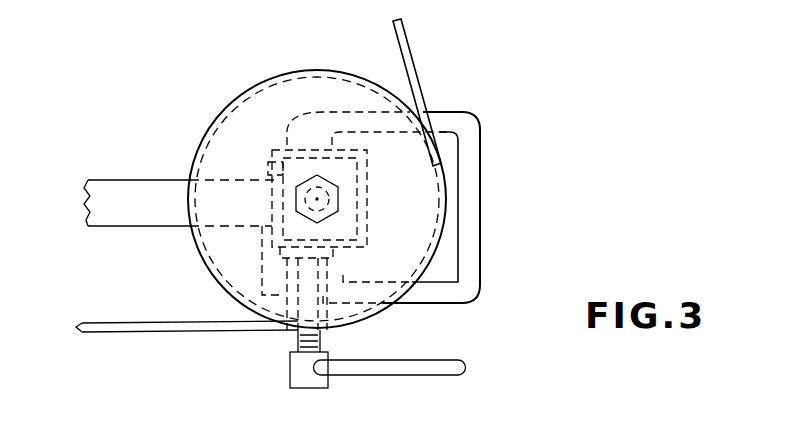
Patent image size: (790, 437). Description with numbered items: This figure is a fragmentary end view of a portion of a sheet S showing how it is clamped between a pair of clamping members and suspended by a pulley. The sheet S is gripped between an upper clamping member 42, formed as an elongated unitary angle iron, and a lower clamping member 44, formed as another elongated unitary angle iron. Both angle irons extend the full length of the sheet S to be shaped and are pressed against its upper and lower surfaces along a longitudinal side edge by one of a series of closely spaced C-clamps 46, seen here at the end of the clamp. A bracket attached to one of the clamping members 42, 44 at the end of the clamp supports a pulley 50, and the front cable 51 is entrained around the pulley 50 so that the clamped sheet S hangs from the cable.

The shaft S is at (118, 178).
The upper clamping member 42 is at (268, 165).
The lower clamping member 44 is at (262, 268).
The C-clamp 46 is at (480, 135).
The pulley 50 is at (268, 102).
The front cable 51 is at (413, 58).